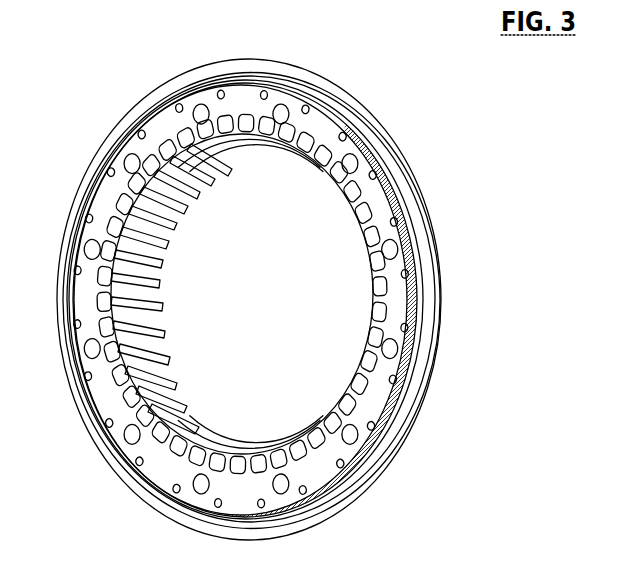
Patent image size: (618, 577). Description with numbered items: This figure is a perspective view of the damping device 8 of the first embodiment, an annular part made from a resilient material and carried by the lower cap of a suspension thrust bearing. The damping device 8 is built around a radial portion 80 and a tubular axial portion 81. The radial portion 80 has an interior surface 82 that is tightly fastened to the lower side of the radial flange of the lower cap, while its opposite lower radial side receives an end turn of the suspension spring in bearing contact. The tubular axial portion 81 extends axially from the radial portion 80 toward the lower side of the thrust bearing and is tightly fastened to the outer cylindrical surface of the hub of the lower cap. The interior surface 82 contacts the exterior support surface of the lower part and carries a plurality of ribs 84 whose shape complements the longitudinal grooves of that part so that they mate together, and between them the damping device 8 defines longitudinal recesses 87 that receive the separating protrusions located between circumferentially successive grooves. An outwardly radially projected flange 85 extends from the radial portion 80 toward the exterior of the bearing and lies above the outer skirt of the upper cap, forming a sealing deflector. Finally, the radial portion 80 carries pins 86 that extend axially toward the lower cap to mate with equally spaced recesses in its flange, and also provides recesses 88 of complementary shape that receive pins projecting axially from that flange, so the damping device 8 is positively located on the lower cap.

The damping device 8 is at (397, 142).
The radial portion 80 is at (400, 202).
The tubular axial portion 81 is at (157, 273).
The interior surface 82 is at (402, 297).
The ribs 84 is at (108, 204).
The flange 85 is at (271, 66).
The pins 86 is at (197, 90).
The longitudinal recesses 87 is at (97, 285).
The recesses 88 is at (172, 88).